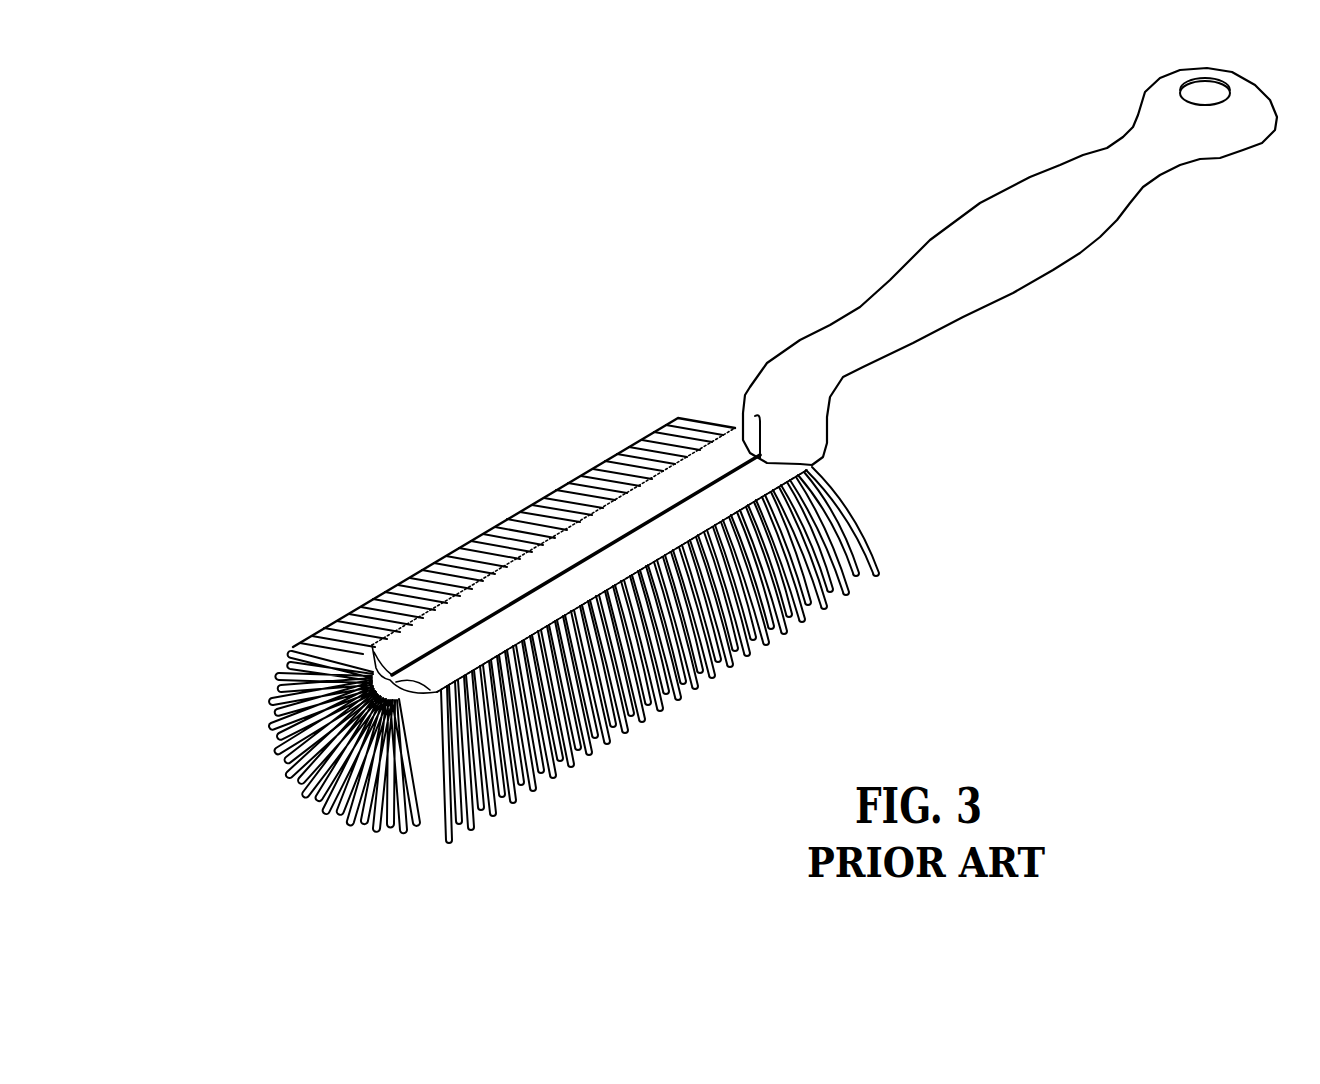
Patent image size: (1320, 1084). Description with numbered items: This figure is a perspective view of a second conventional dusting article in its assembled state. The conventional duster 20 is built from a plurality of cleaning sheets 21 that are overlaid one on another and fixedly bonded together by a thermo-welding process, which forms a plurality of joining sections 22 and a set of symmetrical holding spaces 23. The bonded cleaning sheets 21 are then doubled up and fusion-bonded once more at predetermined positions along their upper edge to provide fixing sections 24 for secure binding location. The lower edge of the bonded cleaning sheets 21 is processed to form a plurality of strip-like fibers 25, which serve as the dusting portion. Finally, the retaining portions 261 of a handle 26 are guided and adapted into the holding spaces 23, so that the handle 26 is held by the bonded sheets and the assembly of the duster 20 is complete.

The duster 20 is at (701, 479).
The cleaning sheets 21 is at (745, 663).
The joining sections 22 is at (480, 573).
The holding spaces 23 is at (598, 530).
The fixing sections 24 is at (330, 800).
The strip-like fibers 25 is at (683, 738).
The handle 26 is at (1053, 272).
The retaining portions 261 is at (277, 697).